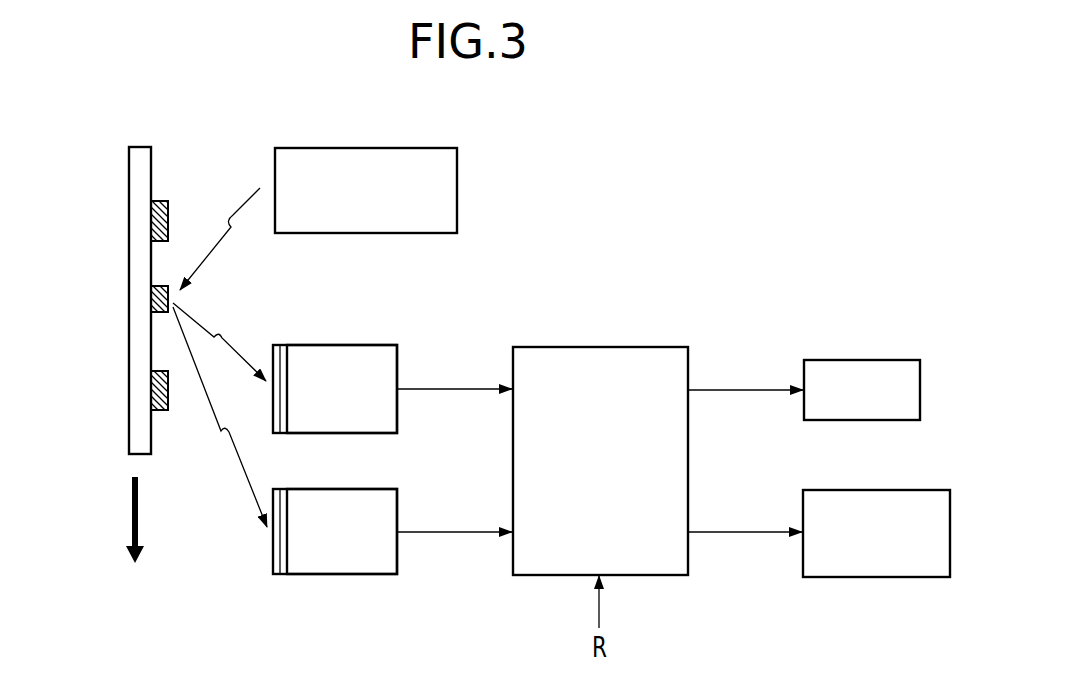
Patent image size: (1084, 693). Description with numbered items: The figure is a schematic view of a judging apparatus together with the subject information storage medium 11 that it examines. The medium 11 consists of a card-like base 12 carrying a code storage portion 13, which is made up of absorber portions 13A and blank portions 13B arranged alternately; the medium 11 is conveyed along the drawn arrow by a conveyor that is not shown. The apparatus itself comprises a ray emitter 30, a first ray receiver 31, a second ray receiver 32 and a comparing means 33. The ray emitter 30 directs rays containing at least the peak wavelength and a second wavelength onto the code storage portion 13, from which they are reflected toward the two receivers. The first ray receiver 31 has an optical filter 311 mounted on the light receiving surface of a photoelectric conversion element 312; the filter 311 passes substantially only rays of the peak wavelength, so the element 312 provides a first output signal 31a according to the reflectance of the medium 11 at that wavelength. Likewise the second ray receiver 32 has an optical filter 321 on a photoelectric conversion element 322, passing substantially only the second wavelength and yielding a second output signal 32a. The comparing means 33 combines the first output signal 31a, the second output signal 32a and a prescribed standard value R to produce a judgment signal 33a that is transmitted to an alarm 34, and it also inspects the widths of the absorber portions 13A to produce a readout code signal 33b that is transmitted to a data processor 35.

The subject information storage medium 11 is at (118, 157).
The card-like base 12 is at (130, 442).
The code storage portion 13 is at (120, 188).
The absorber portion 13A is at (163, 412).
The blank portion 13B is at (153, 262).
The ray emitter 30 is at (380, 147).
The first ray receiver 31 is at (400, 337).
The optical filter 311 is at (283, 348).
The photoelectric conversion element 312 is at (380, 350).
The first output signal 31a is at (457, 388).
The second ray receiver 32 is at (399, 478).
The optical filter 321 is at (282, 492).
The photoelectric conversion element 322 is at (375, 497).
The second output signal 32a is at (453, 530).
The comparing means 33 is at (647, 347).
The judgment signal 33a is at (747, 390).
The readout code signal 33b is at (747, 530).
The alarm 34 is at (867, 360).
The data processor 35 is at (873, 490).